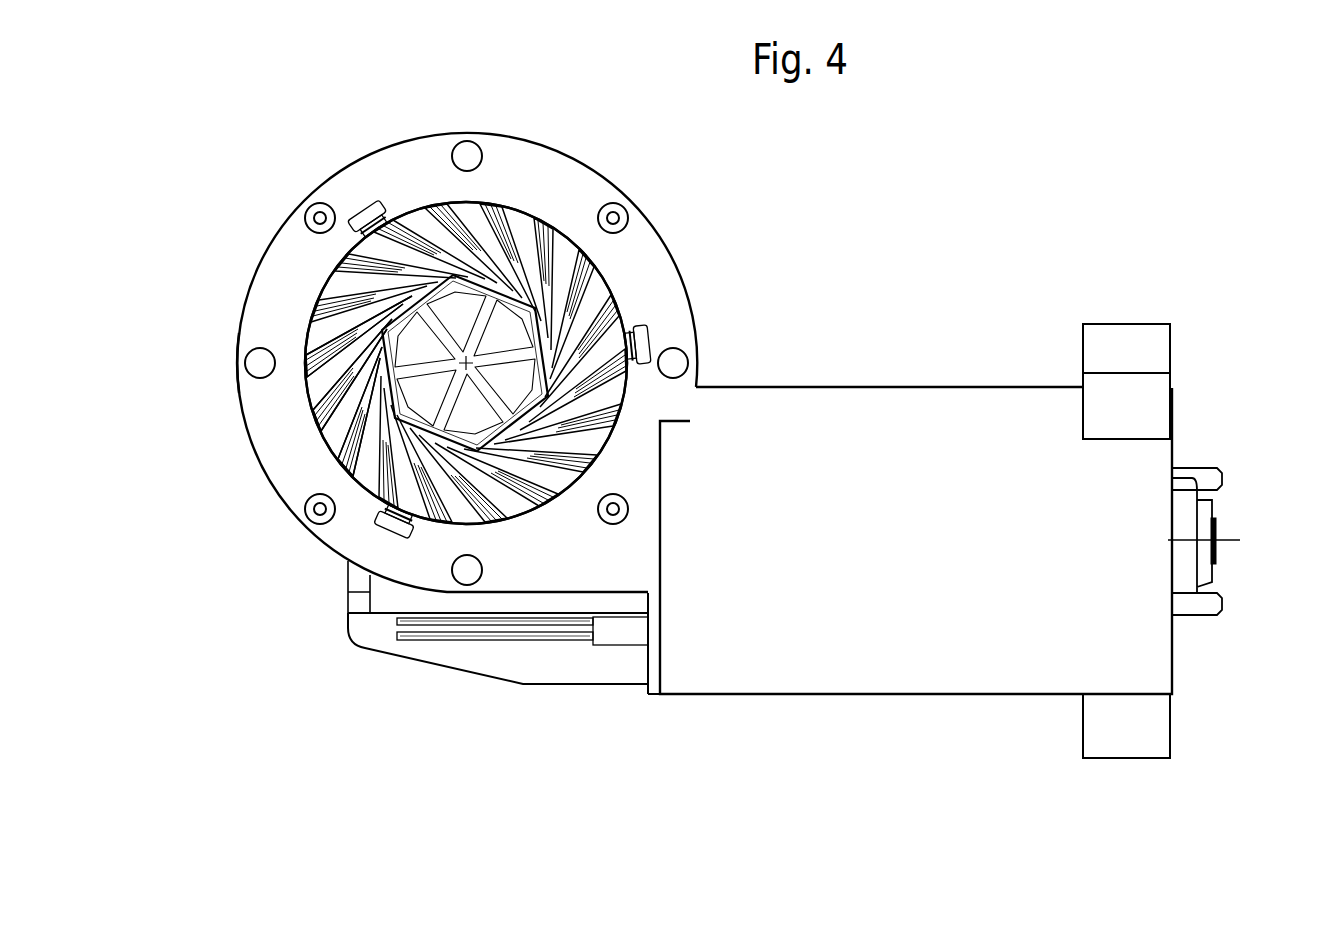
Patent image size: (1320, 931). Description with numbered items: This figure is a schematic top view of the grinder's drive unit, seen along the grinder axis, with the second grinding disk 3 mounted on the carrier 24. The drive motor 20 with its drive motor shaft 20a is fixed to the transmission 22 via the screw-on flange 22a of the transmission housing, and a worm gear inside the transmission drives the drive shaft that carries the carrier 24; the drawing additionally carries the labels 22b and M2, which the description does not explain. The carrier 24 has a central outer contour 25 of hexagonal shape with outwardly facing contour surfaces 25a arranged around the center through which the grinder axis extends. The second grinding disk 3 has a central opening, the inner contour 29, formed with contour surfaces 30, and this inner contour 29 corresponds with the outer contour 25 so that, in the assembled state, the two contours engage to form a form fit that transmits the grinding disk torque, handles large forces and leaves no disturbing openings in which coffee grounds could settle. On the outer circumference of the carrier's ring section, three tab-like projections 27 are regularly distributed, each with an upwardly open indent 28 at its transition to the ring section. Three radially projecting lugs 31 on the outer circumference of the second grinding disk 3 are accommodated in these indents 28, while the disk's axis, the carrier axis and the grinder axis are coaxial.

The second grinding disk 3 is at (555, 217).
The contour surfaces 30 is at (463, 305).
The contour 25 is at (520, 303).
The contour surfaces 25a is at (508, 263).
The inner contour 29 is at (380, 323).
The tab-like projections 27 is at (377, 227).
The lugs 31 is at (373, 227).
The indents 28 is at (387, 223).
The transmission 22 is at (348, 564).
The screw-on flange 22a is at (508, 663).
The flange face 22b is at (253, 392).
The carrier 24 is at (283, 410).
The drive motor 20 is at (795, 670).
The drive motor shaft 20a is at (1286, 540).
The motor rotation direction M2 is at (773, 275).